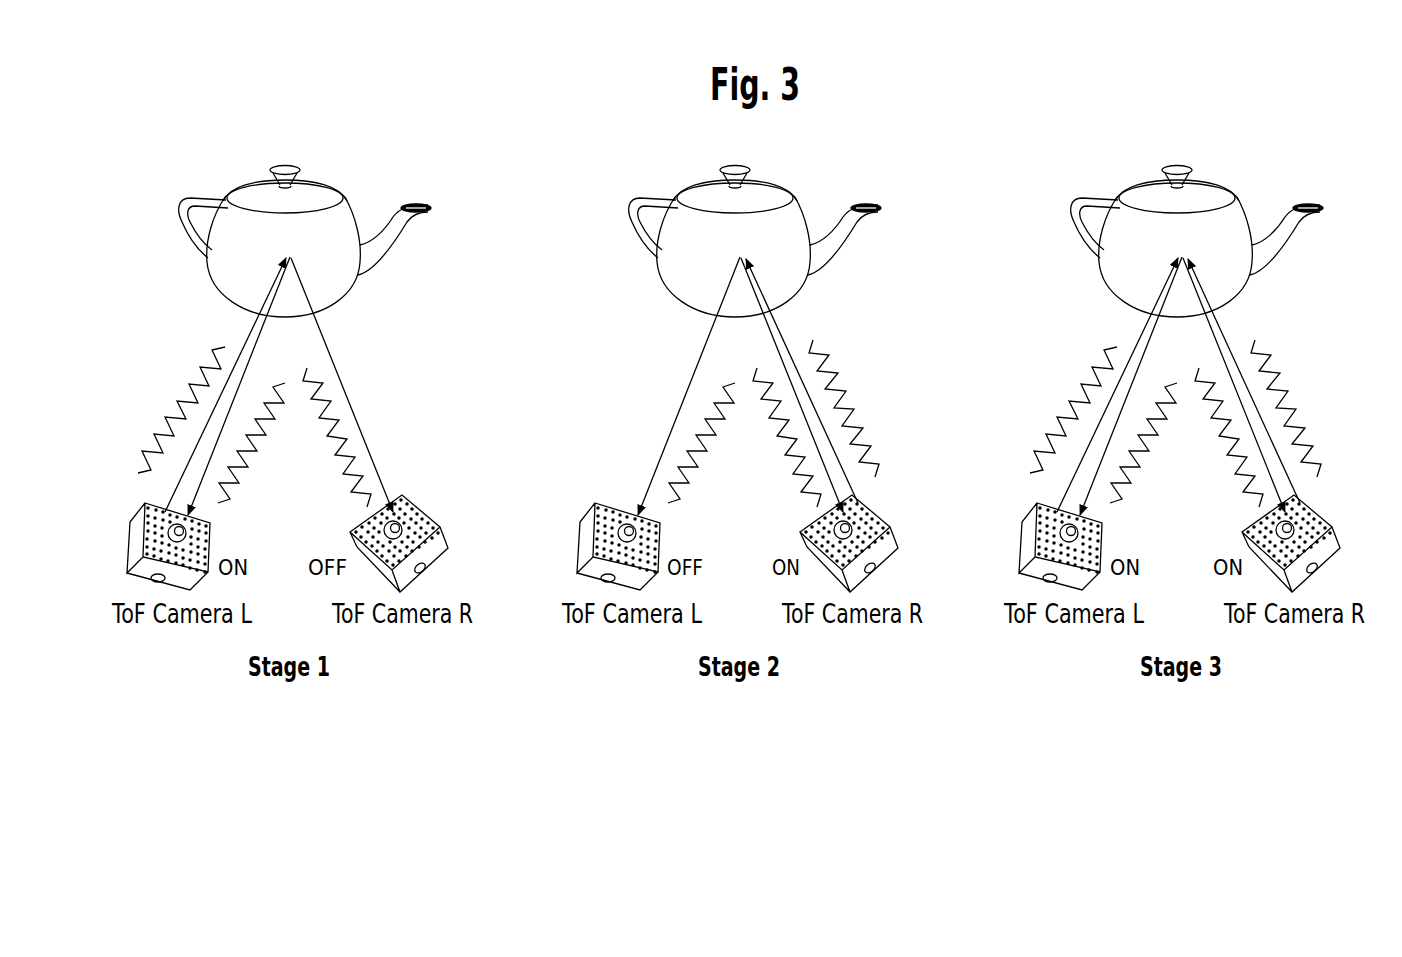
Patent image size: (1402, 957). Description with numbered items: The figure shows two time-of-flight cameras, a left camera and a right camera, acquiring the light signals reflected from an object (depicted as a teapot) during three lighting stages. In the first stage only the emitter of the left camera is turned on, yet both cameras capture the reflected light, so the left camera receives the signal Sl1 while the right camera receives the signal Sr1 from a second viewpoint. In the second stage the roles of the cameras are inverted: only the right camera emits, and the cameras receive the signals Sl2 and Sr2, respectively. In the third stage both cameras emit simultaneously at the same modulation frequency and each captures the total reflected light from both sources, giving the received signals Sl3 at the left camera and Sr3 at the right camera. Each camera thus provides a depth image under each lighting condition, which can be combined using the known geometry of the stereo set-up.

The received signal of the left ToF camera in stage 1 Sl1 is at (251, 462).
The received signal of the right ToF camera in stage 1 Sr1 is at (331, 455).
The received signal of the left ToF camera in stage 2 Sl2 is at (701, 462).
The received signal of the right ToF camera in stage 2 Sr2 is at (780, 455).
The received signal of the left ToF camera in stage 3 Sl3 is at (1143, 462).
The received signal of the right ToF camera in stage 3 Sr3 is at (1223, 455).